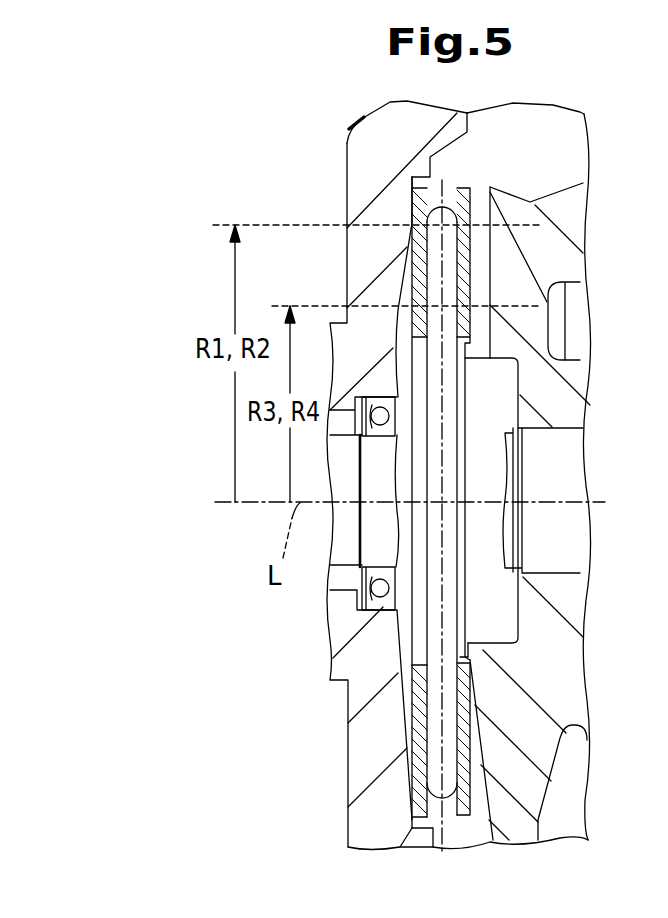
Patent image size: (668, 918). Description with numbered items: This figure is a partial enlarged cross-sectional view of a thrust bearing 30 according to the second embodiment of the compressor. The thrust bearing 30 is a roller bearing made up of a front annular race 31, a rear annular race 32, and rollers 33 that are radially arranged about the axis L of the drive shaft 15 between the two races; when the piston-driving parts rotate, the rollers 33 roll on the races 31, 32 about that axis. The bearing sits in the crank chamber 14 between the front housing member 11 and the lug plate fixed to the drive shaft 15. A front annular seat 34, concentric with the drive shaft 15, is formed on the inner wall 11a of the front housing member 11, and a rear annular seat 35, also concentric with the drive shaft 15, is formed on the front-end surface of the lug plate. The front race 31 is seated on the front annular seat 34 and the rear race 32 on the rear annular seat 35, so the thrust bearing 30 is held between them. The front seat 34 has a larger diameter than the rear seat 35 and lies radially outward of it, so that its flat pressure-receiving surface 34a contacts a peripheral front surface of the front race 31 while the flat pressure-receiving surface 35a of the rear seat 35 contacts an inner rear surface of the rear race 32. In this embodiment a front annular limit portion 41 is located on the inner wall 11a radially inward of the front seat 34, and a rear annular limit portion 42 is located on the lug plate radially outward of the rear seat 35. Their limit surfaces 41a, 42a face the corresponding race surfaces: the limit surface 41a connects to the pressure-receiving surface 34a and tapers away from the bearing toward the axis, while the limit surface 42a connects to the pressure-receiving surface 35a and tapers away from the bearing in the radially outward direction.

The front housing member 11 is at (377, 131).
The inner wall of the front housing member 11a is at (447, 148).
The crank chamber 14 is at (573, 145).
The drive shaft 15 is at (563, 515).
The thrust bearing 30 is at (408, 195).
The front annular race 31 is at (423, 733).
The rear annular race 32 is at (467, 738).
The rollers 33 is at (443, 770).
The front annular seat 34 is at (405, 232).
The pressure-receiving surface 34a is at (420, 832).
The rear annular seat 35 is at (478, 326).
The pressure-receiving surface 35a is at (475, 657).
The front annular limit portion 41 is at (393, 700).
The limit surface 41a is at (397, 657).
The rear annular limit portion 42 is at (480, 715).
The limit surface 42a is at (485, 803).